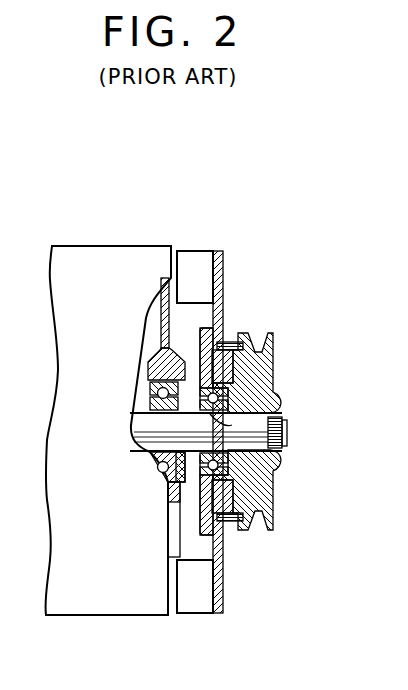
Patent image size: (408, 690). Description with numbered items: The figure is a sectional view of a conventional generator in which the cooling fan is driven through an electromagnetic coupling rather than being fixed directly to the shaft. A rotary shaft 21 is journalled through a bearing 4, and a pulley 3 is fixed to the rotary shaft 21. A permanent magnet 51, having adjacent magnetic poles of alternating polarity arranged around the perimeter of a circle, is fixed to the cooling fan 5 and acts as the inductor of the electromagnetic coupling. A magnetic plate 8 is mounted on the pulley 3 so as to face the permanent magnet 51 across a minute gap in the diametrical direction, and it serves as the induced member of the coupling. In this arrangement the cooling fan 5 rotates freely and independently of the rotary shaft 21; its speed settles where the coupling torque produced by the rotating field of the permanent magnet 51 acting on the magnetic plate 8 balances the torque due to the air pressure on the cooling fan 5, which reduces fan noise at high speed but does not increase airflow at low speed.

The rotary shaft 21 is at (150, 427).
The cooling fan 5 is at (226, 275).
The pulley 3 is at (275, 347).
The permanent magnet 51 is at (222, 368).
The magnetic plate 8 is at (229, 341).
The bearing 4 is at (287, 426).